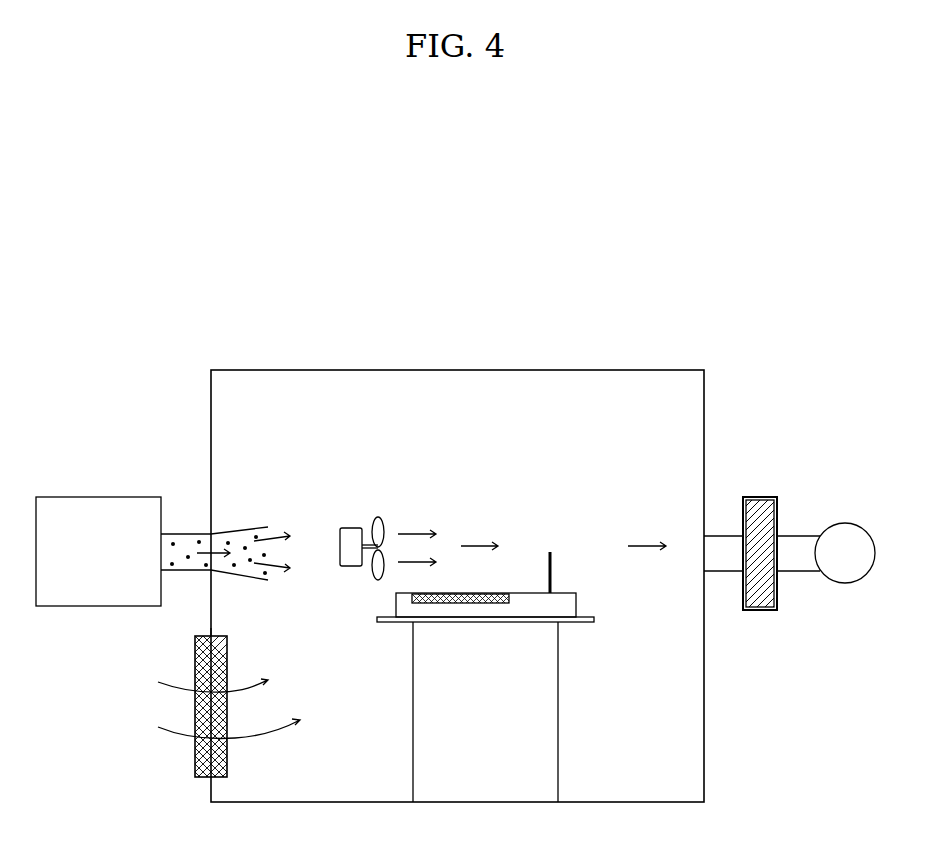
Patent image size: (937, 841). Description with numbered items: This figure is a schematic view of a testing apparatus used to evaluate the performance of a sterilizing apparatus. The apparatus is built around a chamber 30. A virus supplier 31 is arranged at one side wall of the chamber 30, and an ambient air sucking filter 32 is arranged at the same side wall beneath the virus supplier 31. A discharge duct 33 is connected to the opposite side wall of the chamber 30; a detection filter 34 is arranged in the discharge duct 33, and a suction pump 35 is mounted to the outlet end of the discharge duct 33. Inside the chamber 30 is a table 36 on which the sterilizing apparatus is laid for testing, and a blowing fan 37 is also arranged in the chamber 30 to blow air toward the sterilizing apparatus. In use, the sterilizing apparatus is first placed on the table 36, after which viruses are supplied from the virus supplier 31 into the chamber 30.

The chamber 30 is at (460, 370).
The virus supplier 31 is at (101, 497).
The ambient air sucking filter 32 is at (195, 766).
The discharge duct 33 is at (801, 573).
The detection filter 34 is at (760, 497).
The suction pump 35 is at (845, 523).
The table 36 is at (547, 680).
The blowing fan 37 is at (364, 520).